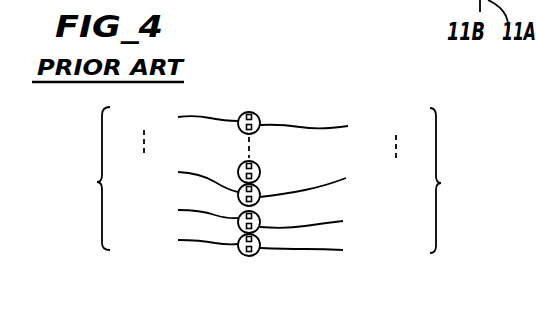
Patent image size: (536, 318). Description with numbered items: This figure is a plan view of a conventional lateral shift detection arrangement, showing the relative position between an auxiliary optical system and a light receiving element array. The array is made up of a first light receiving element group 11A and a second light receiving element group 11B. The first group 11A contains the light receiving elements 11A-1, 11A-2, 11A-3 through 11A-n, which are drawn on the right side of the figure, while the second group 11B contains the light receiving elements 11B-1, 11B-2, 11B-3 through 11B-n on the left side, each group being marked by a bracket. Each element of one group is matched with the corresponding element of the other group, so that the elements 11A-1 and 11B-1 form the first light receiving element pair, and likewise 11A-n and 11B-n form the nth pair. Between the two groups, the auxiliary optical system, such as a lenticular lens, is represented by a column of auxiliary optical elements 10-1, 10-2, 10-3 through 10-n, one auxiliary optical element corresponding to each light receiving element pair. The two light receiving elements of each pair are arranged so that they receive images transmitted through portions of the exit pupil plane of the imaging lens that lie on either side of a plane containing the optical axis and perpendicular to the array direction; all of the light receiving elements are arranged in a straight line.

The auxiliary optical element 10-n is at (257, 115).
The auxiliary optical element 10-3 is at (260, 180).
The auxiliary optical element 10-2 is at (261, 218).
The auxiliary optical element 10-1 is at (258, 256).
The second light receiving element group 11B is at (94, 178).
The first light receiving element group 11A is at (439, 180).
The light receiving element 11B-n is at (174, 116).
The light receiving element 11B-3 is at (174, 175).
The light receiving element 11B-2 is at (174, 213).
The light receiving element 11B-1 is at (174, 243).
The light receiving element 11A-n is at (339, 123).
The light receiving element 11A-3 is at (339, 180).
The light receiving element 11A-2 is at (339, 219).
The light receiving element 11A-1 is at (336, 251).